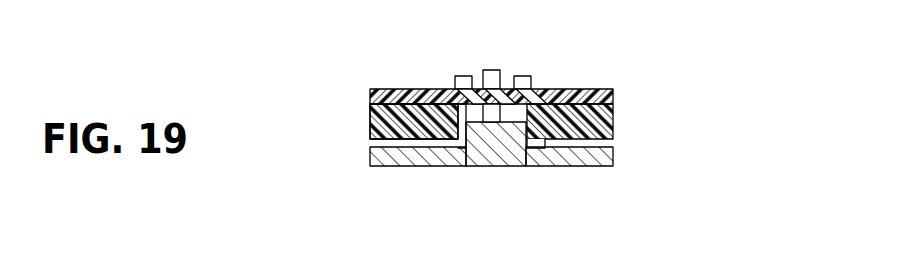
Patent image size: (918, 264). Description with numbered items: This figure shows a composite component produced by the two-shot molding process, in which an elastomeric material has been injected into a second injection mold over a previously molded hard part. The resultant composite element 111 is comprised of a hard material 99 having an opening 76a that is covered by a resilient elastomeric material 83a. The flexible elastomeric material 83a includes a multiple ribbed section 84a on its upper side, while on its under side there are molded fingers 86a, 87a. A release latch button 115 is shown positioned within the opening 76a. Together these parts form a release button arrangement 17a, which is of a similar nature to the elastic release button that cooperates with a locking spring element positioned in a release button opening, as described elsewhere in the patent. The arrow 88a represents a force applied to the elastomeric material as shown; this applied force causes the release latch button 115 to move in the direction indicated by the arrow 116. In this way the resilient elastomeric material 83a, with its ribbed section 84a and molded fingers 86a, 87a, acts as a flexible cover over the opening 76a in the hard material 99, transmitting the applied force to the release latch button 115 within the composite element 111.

The release button arrangement 17a is at (524, 70).
The opening 76a is at (457, 116).
The resilient elastomeric material 83a is at (610, 91).
The multiple ribbed section 84a is at (464, 73).
The molded finger 86a is at (463, 126).
The molded finger 87a is at (545, 152).
The arrow 88a is at (492, 66).
The hard material 99 is at (370, 126).
The composite element 111 is at (360, 113).
The release latch button 115 is at (489, 142).
The arrow 116 is at (492, 152).